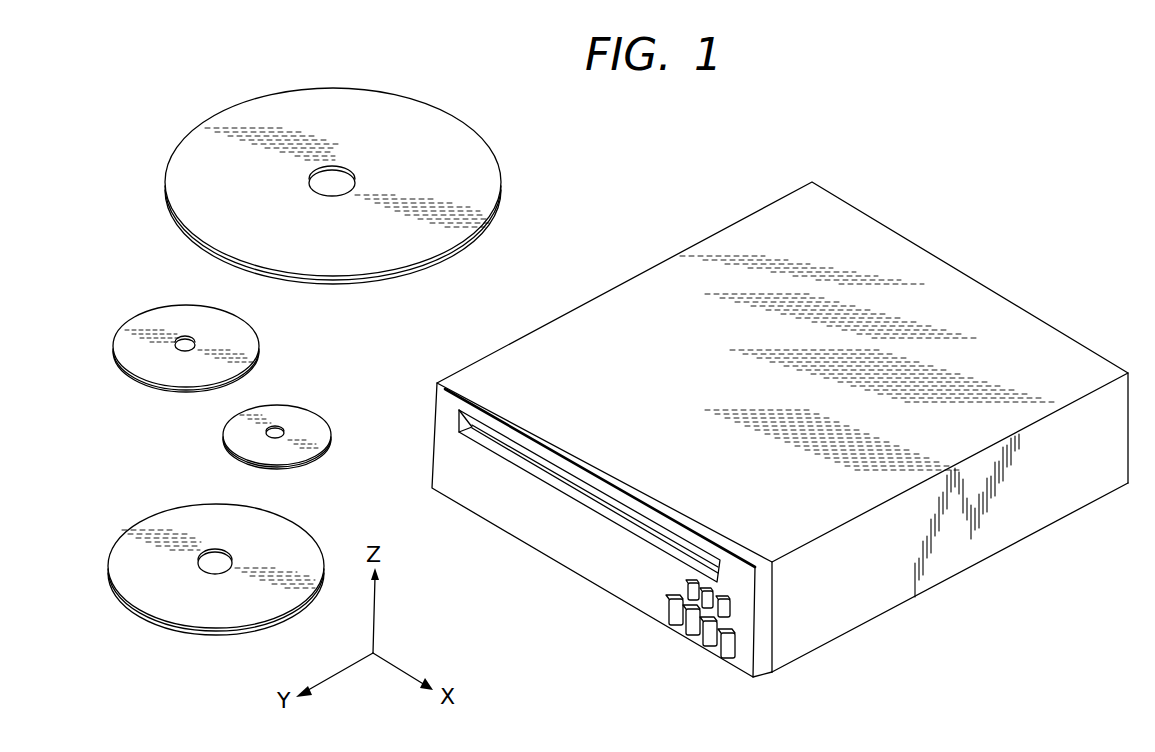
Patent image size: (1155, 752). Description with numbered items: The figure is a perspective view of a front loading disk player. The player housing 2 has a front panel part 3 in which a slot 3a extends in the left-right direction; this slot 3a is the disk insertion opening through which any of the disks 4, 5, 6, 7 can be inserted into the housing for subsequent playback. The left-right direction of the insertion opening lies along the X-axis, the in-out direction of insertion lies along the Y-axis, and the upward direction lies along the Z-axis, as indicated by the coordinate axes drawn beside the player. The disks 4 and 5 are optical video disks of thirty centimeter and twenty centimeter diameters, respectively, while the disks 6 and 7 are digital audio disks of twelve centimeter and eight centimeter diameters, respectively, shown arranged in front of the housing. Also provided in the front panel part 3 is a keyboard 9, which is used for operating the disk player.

The player housing 2 is at (998, 286).
The front panel part 3 is at (593, 530).
The slot 3a is at (563, 478).
The disk 4 is at (237, 118).
The disk 5 is at (172, 518).
The disk 6 is at (158, 318).
The disk 7 is at (233, 427).
The keyboard 9 is at (662, 632).